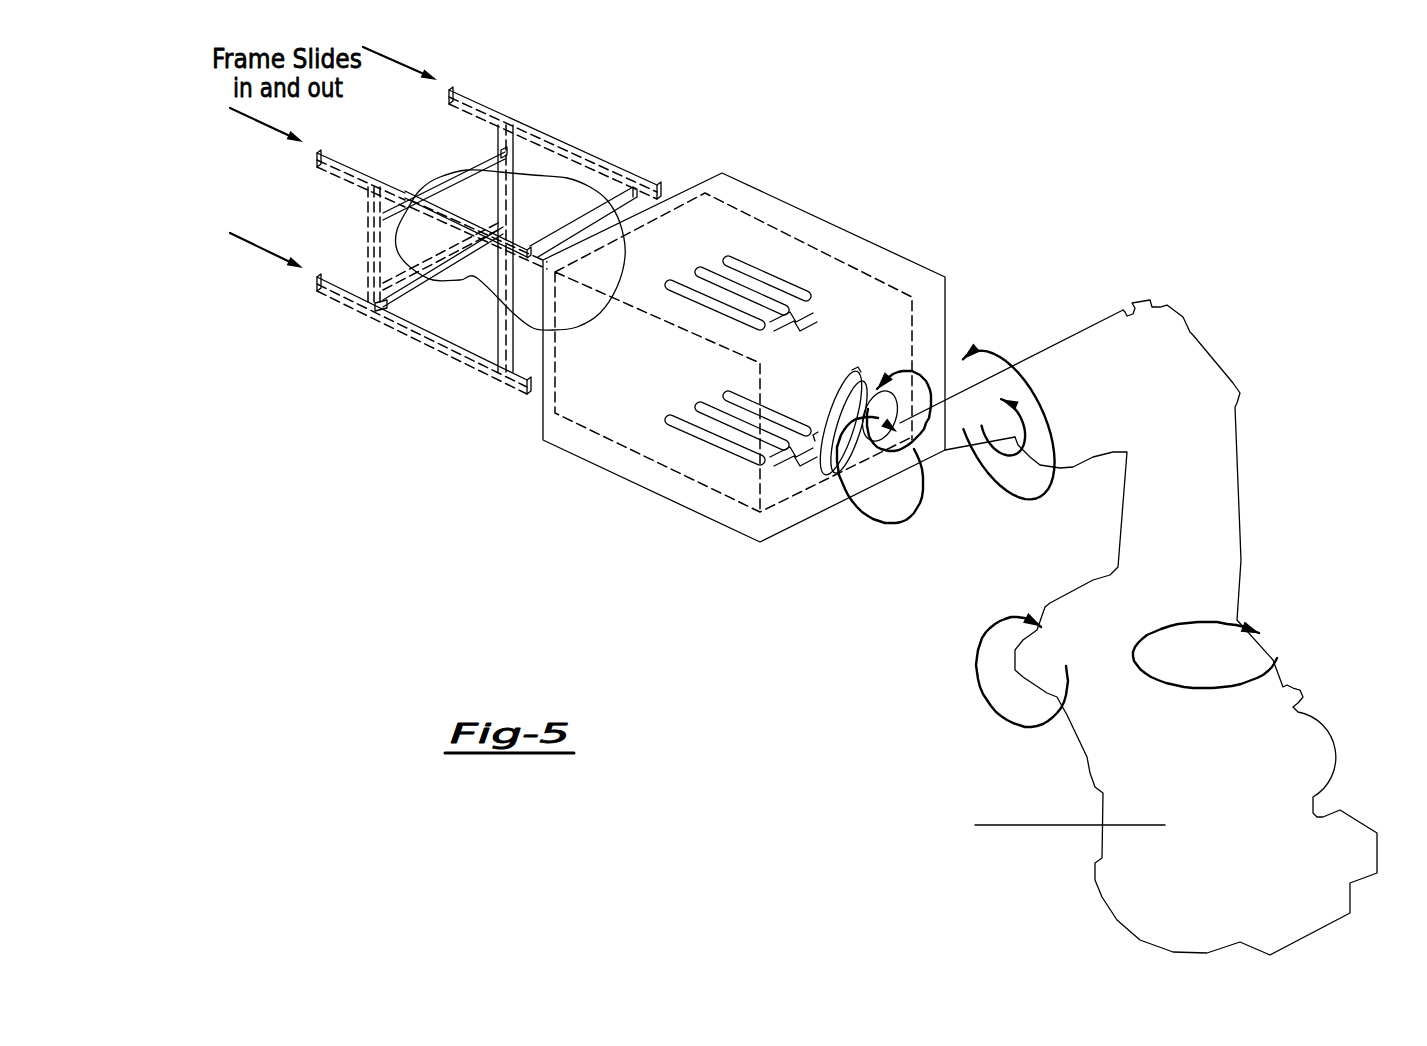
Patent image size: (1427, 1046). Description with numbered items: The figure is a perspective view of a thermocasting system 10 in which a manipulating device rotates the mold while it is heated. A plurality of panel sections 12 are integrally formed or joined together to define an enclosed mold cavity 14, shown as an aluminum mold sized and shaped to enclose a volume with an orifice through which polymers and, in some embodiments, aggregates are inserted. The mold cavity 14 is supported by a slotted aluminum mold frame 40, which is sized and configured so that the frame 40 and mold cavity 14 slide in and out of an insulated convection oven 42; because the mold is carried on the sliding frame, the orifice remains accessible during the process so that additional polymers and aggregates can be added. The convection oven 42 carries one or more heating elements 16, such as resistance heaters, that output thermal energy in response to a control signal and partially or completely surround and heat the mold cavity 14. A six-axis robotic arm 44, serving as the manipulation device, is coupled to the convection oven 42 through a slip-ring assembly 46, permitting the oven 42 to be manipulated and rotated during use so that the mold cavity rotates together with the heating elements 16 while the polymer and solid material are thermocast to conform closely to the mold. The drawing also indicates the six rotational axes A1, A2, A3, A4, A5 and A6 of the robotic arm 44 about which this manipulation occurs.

The thermocasting system 10 is at (1264, 312).
The panel sections 12 is at (478, 278).
The mold cavity 14 is at (555, 207).
The heating elements 16 is at (773, 268).
The slotted aluminum mold frame 40 is at (488, 102).
The convection oven 42 is at (722, 468).
The robotic arm 44 is at (1240, 483).
The slip-ring assembly 46 is at (862, 372).
The robot arm axis 1 A1 is at (1205, 572).
The robot arm axis 2 A2 is at (1112, 627).
The robot arm axis 3 A3 is at (933, 493).
The robot arm axis 4 A4 is at (838, 480).
The robot arm axis 5 A5 is at (836, 478).
The robot arm axis 6 A6 is at (960, 484).